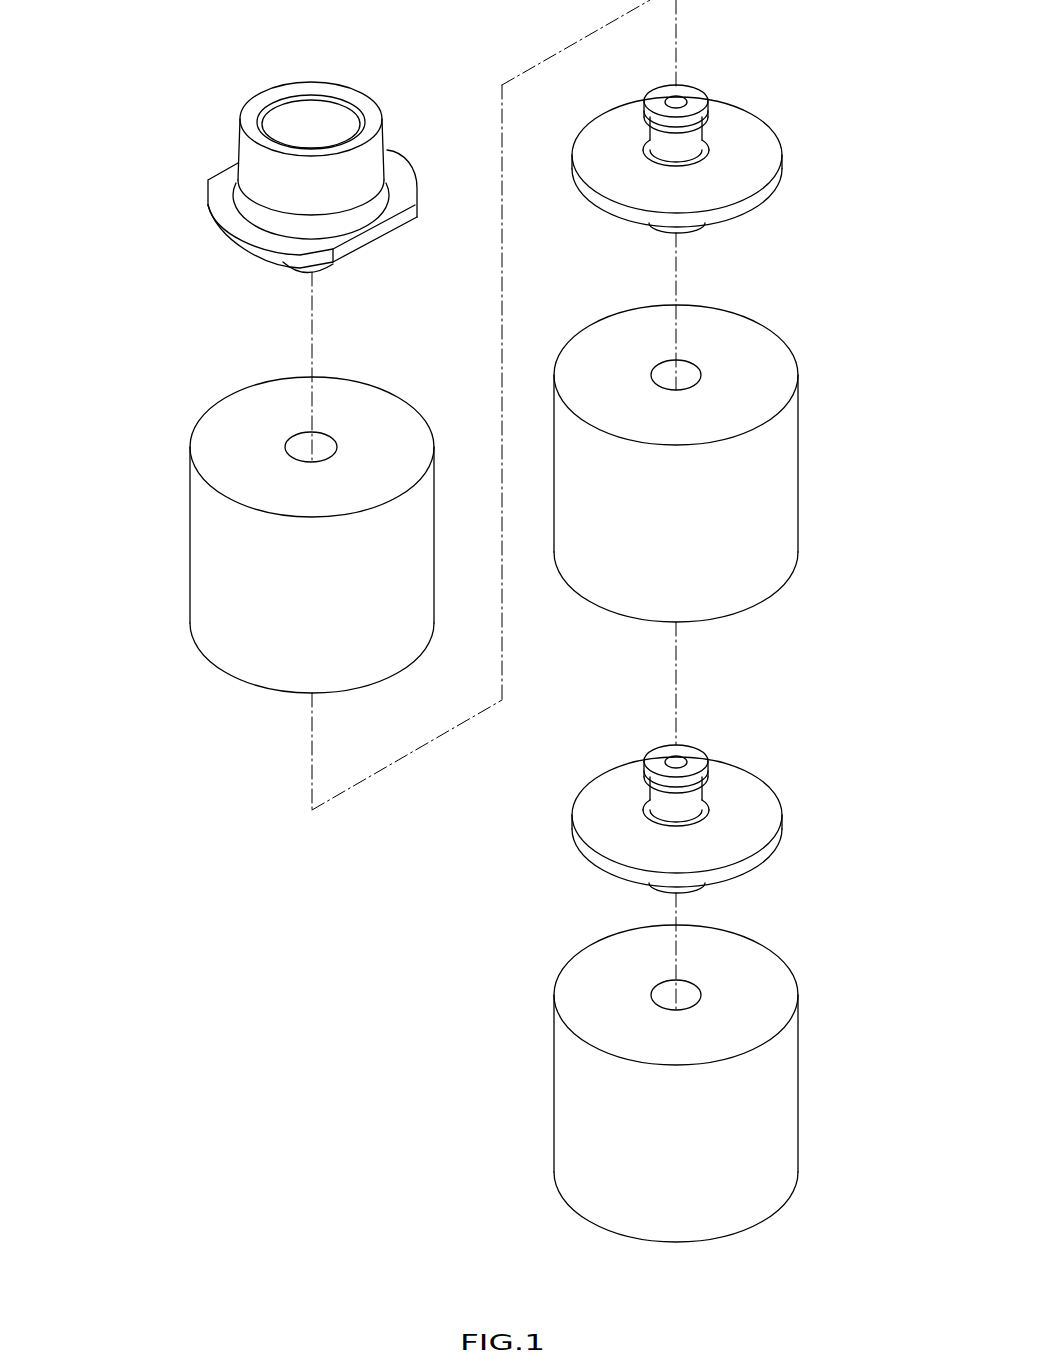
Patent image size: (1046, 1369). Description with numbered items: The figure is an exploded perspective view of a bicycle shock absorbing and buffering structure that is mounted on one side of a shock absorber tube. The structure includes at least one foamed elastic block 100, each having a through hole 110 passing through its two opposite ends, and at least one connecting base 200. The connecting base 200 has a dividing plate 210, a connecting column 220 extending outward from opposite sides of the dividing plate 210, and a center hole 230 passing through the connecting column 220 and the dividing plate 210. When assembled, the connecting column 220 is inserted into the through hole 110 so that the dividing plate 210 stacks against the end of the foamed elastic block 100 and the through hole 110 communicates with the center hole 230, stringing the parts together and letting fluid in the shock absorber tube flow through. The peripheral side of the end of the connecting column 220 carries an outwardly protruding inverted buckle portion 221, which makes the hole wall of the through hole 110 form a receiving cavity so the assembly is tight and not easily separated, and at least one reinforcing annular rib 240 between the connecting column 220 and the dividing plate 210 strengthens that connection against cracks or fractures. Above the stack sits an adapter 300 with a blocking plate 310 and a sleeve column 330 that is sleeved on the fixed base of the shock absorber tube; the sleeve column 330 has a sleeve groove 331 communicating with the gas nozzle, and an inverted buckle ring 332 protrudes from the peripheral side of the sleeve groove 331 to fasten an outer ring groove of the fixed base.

The foamed elastic block 100 is at (200, 545).
The through hole 110 is at (292, 450).
The connecting base 200 is at (562, 212).
The dividing plate 210 is at (590, 138).
The connecting column 220 is at (675, 158).
The inverted buckle portion 221 is at (702, 116).
The center hole 230 is at (679, 98).
The reinforcing annular rib 240 is at (705, 160).
The adapter 300 is at (226, 101).
The blocking plate 310 is at (224, 197).
The sleeve column 330 is at (246, 174).
The sleeve groove 331 is at (317, 124).
The inverted buckle ring 332 is at (268, 120).